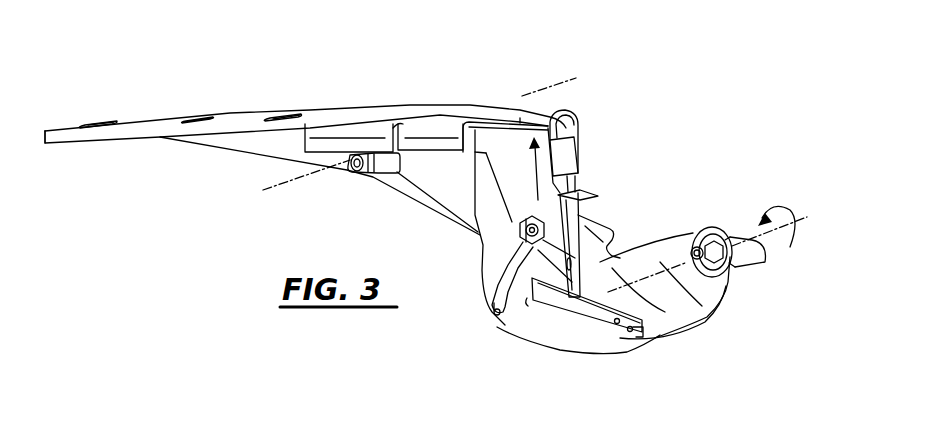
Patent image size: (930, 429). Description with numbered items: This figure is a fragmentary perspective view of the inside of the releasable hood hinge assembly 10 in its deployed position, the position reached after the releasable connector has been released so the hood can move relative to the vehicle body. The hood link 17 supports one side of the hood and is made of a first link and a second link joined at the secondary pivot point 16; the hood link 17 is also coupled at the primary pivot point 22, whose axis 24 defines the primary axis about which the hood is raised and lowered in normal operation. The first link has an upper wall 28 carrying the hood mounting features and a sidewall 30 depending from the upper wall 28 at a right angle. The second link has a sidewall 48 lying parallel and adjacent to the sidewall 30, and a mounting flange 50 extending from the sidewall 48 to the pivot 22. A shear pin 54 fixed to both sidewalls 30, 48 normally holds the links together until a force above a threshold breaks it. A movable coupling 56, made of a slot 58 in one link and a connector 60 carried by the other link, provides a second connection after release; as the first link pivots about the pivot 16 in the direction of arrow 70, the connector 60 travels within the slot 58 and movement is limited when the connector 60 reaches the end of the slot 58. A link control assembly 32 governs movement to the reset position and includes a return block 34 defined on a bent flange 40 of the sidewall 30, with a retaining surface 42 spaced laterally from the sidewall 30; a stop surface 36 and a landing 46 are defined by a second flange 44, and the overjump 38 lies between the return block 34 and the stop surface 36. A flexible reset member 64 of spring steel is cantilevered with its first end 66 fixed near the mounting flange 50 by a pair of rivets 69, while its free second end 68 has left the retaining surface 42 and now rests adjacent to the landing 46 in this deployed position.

The hood hinge assembly 10 is at (660, 60).
The secondary pivot point 16 is at (352, 168).
The hood link 17 is at (395, 208).
The primary pivot point 22 is at (695, 233).
The axis 24 is at (807, 217).
The upper wall 28 is at (254, 111).
The sidewall 30 is at (488, 162).
The link control assembly 32 is at (548, 190).
The return block 34 is at (580, 173).
The stop surface 36 is at (582, 194).
The overjump 38 is at (592, 181).
The bent flange 40 is at (575, 148).
The retaining surface 42 is at (558, 120).
The second flange 44 is at (578, 225).
The landing 46 is at (603, 257).
The sidewall 48 is at (557, 333).
The mounting flange 50 is at (710, 300).
The shear pin 54 is at (527, 303).
The movable coupling 56 is at (497, 279).
The slot 58 is at (495, 316).
The connector 60 is at (517, 233).
The reset member 64 is at (587, 333).
The first end 66 is at (638, 333).
The second end 68 is at (557, 300).
The rivets 69 is at (623, 343).
The arrow 70 is at (535, 148).